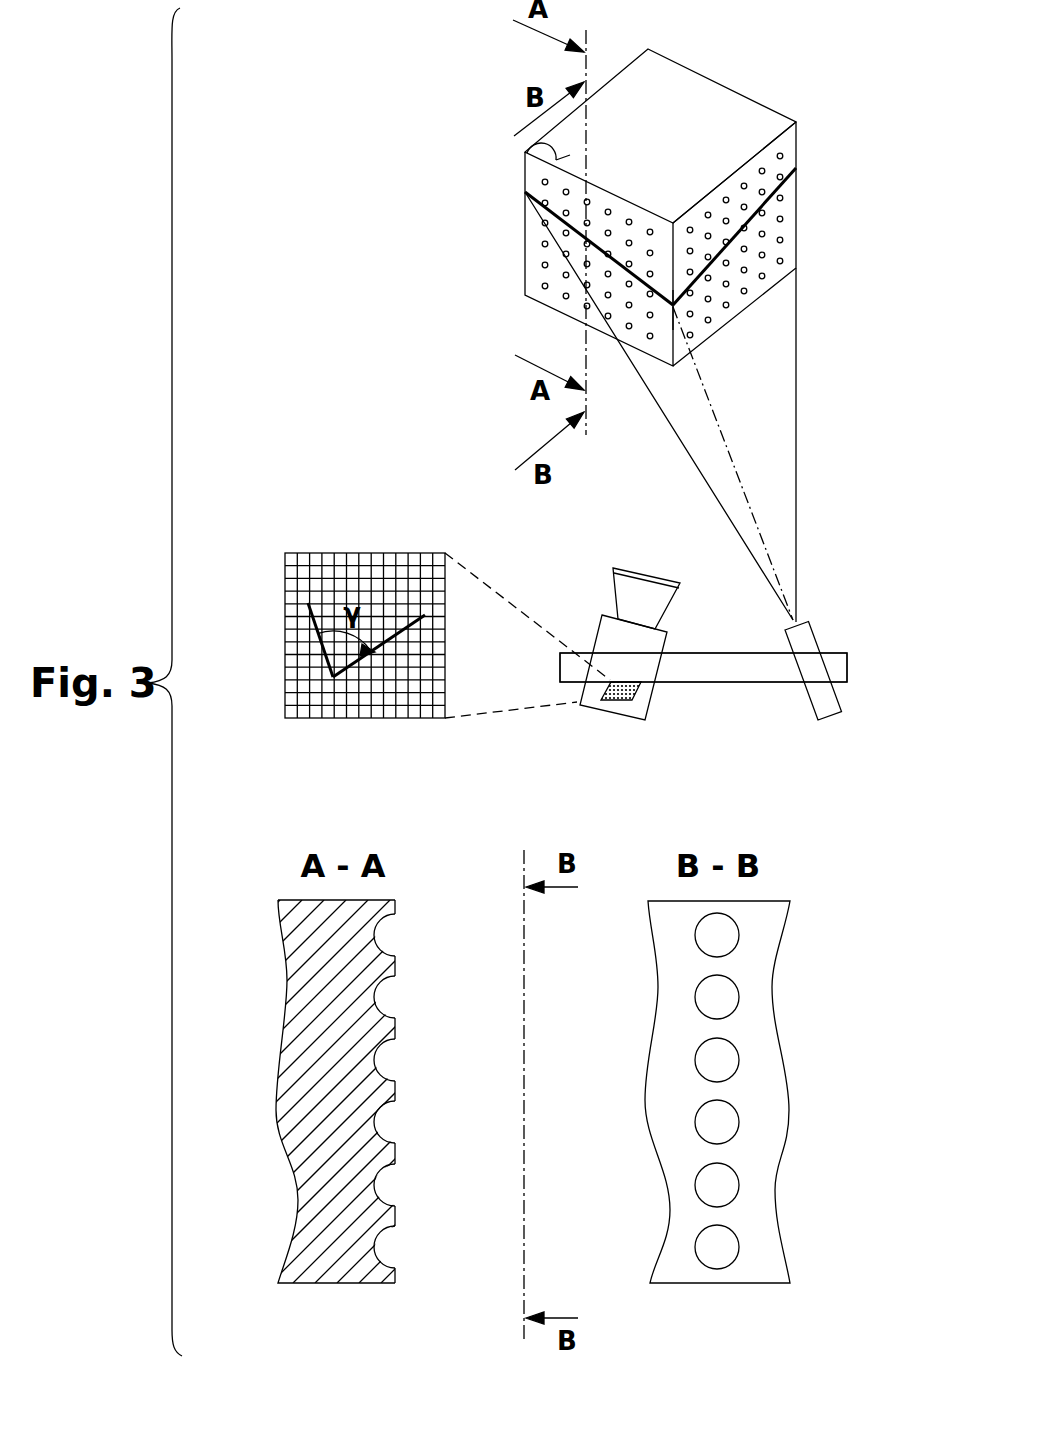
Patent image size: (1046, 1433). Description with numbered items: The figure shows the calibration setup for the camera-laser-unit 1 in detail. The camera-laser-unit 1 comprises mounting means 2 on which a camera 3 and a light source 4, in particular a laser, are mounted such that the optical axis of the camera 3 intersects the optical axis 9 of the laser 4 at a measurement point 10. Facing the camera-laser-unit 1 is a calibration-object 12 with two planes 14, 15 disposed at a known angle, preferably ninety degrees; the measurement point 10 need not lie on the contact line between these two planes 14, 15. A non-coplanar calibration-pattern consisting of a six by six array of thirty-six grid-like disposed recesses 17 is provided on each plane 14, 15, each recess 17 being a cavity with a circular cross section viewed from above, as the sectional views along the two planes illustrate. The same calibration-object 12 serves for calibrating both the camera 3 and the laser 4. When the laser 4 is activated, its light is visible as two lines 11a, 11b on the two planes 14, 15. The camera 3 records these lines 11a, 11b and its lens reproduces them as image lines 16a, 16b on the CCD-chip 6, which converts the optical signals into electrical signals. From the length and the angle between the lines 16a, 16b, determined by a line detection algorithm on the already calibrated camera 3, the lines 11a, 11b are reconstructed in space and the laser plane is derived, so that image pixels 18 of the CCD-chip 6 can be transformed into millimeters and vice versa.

The camera-laser-unit 1 is at (762, 738).
The mounting means 2 is at (720, 670).
The camera 3 is at (632, 703).
The light source 4 is at (830, 700).
The CCD-chip 6 is at (343, 563).
The optical axis of the laser 9 is at (768, 550).
The measurement point 10 is at (677, 313).
The line 11a is at (545, 220).
The line 11b is at (780, 190).
The calibration-object 12 is at (715, 97).
The plane 14 is at (527, 153).
The plane 15 is at (763, 147).
The line 16a is at (414, 622).
The line 16b is at (312, 623).
The recesses 17 is at (545, 285).
The image pixels 18 is at (303, 586).